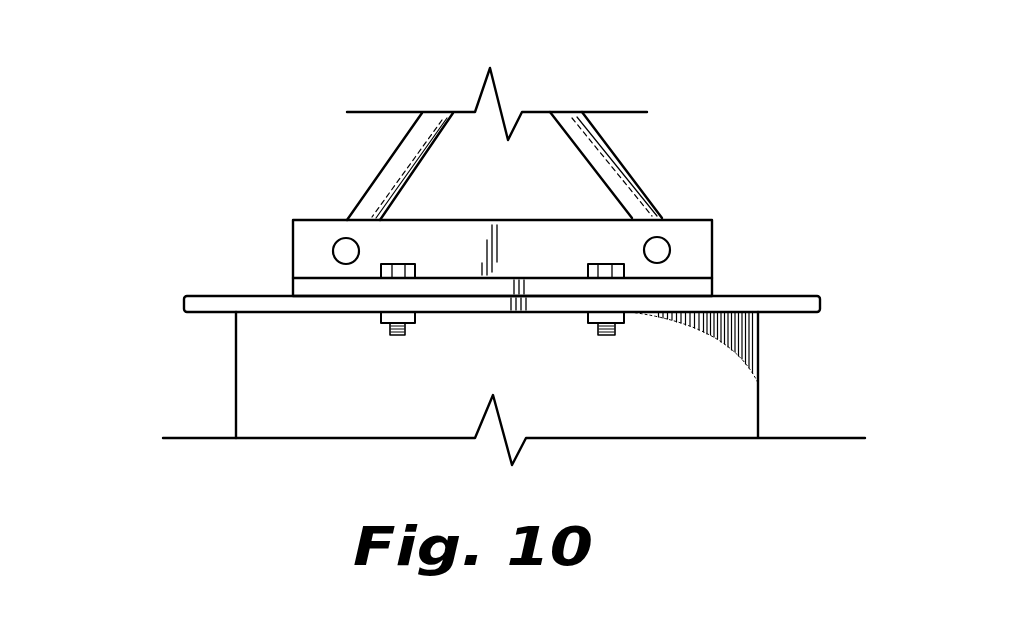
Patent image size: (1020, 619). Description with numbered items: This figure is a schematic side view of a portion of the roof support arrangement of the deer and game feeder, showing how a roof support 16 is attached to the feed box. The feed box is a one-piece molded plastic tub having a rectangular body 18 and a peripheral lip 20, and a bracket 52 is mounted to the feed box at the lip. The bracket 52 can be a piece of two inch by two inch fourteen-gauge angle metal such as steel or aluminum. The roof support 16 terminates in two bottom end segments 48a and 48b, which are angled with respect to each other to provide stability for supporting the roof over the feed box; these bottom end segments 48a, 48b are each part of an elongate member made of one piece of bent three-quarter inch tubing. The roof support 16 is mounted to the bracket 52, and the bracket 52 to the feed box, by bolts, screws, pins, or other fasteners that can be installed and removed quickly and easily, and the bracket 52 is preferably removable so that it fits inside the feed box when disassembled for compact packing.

The roof support 16 is at (346, 143).
The rectangular body 18 is at (235, 370).
The peripheral lip 20 is at (215, 297).
The bottom end segment 48a is at (358, 202).
The bottom end segment 48b is at (630, 175).
The bracket 52 is at (712, 238).